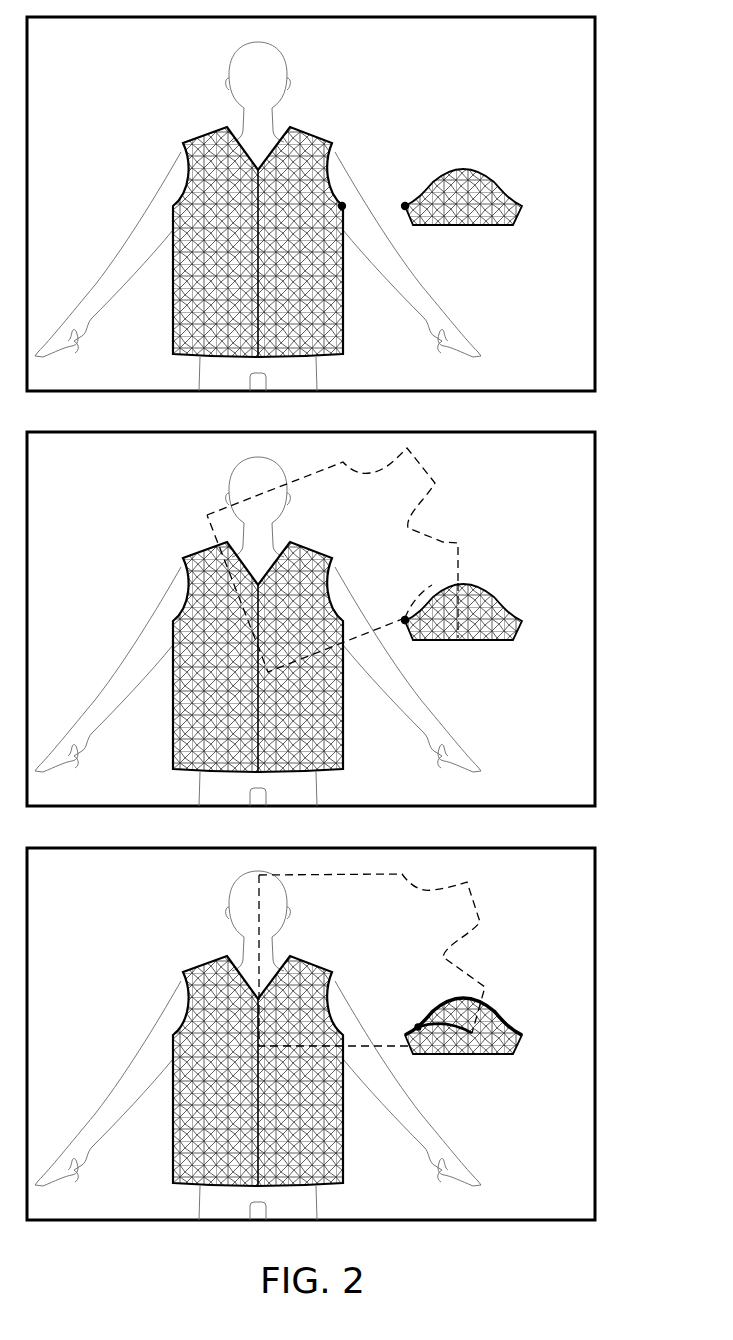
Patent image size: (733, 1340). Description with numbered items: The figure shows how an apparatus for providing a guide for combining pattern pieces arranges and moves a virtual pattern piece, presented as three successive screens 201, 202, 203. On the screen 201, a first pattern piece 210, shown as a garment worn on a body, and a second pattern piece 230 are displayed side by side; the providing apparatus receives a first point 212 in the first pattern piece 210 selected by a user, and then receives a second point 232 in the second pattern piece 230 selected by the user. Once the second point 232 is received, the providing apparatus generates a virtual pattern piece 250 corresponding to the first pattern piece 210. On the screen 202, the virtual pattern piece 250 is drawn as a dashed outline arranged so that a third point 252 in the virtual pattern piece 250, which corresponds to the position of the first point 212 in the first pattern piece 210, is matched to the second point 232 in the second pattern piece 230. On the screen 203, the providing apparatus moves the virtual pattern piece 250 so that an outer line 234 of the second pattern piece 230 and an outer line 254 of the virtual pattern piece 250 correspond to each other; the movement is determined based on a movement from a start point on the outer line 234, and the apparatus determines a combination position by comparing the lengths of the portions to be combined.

The screen 201 is at (597, 203).
The screen 202 is at (597, 618).
The screen 203 is at (597, 1032).
The first pattern piece 210 is at (309, 128).
The first point 212 is at (344, 205).
The second pattern piece 230 is at (479, 162).
The second point 232 is at (405, 204).
The outer line 234 is at (504, 1022).
The virtual pattern piece 250 is at (447, 536).
The third point 252 is at (404, 617).
The outer line 254 is at (450, 1027).